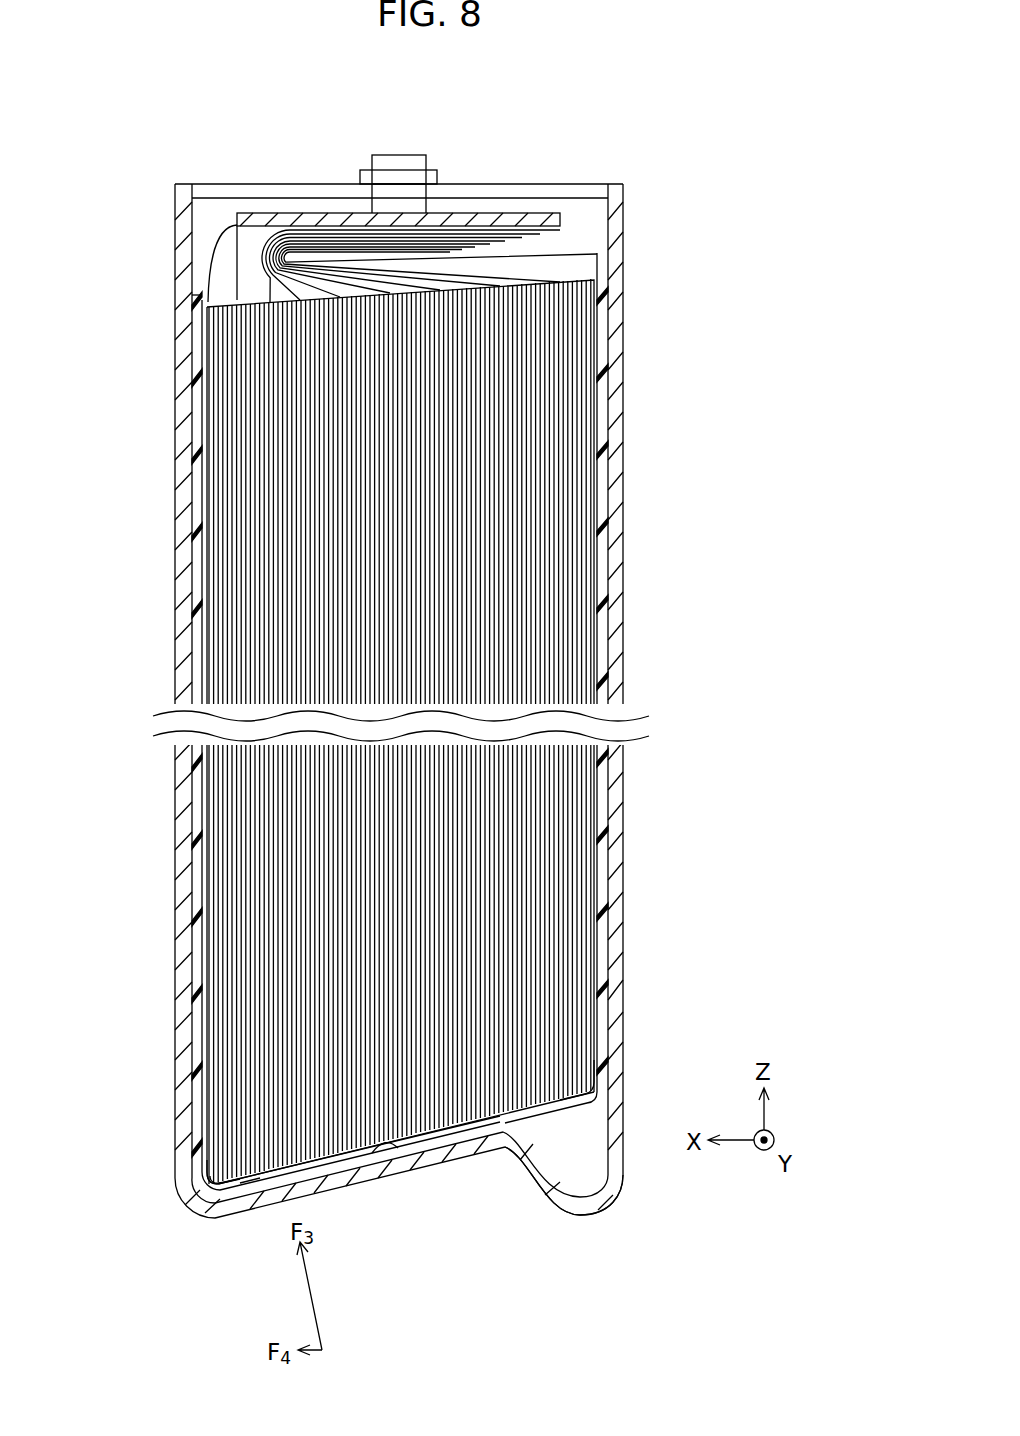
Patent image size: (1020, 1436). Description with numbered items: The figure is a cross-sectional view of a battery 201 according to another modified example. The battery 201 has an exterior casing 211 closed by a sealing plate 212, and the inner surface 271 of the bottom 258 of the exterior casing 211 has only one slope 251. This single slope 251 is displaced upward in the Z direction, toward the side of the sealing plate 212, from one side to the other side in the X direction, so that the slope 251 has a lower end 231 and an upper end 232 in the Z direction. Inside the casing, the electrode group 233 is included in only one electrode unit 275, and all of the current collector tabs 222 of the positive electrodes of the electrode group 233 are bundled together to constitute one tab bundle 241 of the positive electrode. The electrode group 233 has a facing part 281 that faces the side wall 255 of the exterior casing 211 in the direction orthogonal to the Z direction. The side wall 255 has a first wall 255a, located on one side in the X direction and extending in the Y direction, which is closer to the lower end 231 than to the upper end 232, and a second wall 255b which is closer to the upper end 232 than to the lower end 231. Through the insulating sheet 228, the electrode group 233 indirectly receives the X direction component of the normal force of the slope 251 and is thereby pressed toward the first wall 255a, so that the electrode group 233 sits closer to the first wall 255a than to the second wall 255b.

The battery 201 is at (506, 155).
The exterior casing 211 is at (613, 617).
The sealing plate 212 is at (278, 190).
The current collector tabs 222 is at (218, 292).
The insulating sheet 228 is at (500, 1140).
The lower end 231 is at (223, 1163).
The upper end 232 is at (527, 1123).
The electrode group 233 is at (522, 460).
The tab bundle 241 is at (227, 248).
The slope 251 is at (313, 1163).
The side wall 255 is at (645, 822).
The first wall 255a is at (185, 850).
The second wall 255b is at (617, 897).
The bottom 258 is at (445, 1162).
The inner surface 271 is at (377, 1160).
The electrode unit 275 is at (250, 483).
The facing part 281 is at (585, 666).